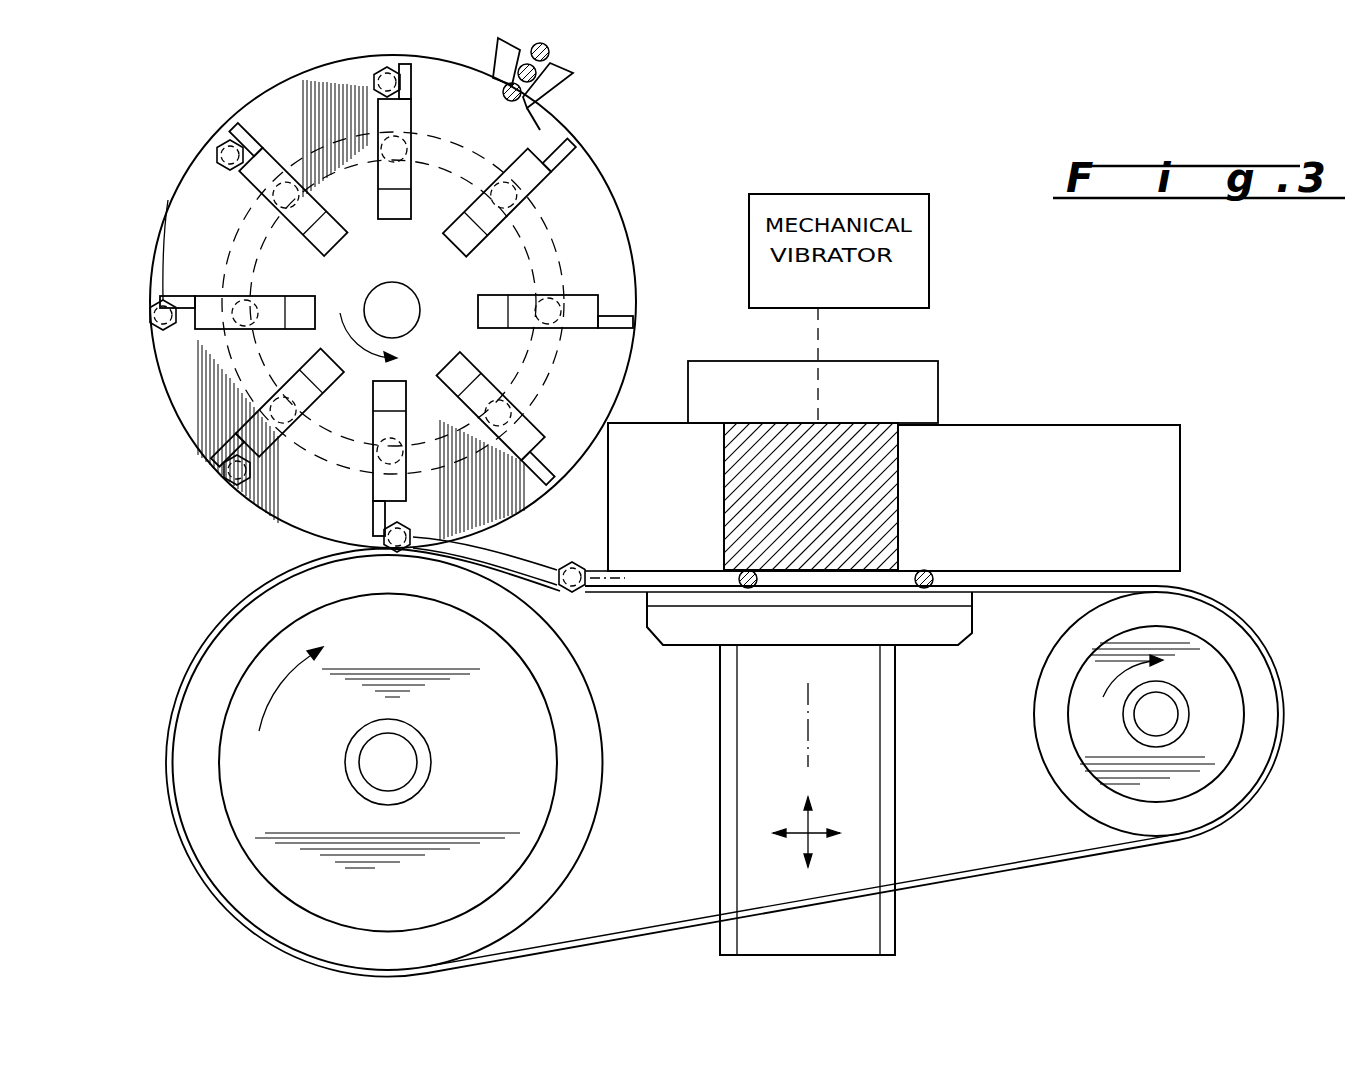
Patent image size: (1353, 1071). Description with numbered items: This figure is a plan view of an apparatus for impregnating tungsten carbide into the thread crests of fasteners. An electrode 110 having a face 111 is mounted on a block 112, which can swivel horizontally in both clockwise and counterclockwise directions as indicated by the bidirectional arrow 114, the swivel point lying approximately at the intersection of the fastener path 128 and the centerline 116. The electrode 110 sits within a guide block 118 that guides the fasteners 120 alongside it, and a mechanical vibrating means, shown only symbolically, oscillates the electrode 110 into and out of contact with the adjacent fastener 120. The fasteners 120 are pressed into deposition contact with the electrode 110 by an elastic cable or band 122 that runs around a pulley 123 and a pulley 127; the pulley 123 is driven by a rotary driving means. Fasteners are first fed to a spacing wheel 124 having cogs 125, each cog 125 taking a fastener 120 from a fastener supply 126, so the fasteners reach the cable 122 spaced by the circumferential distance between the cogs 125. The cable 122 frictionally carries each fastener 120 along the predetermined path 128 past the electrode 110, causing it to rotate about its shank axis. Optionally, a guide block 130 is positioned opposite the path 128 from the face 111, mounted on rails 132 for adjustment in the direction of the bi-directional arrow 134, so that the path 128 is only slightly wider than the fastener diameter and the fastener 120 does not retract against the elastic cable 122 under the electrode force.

The electrode 110 is at (897, 500).
The face 111 is at (885, 568).
The block 112 is at (940, 382).
The bidirectional arrow 114 is at (820, 832).
The centerline 116 is at (808, 738).
The guide block 118 is at (640, 430).
The fasteners 120 is at (549, 49).
The cable or band 122 is at (1130, 847).
The pulley 123 is at (211, 647).
The wheel 124 is at (604, 262).
The cogs 125 is at (152, 281).
The fastener supply 126 is at (556, 92).
The pulley 127 is at (1220, 630).
The fastener path 128 is at (628, 578).
The guide block 130 is at (957, 645).
The rails 132 is at (737, 813).
The bi-directional arrow 134 is at (803, 850).